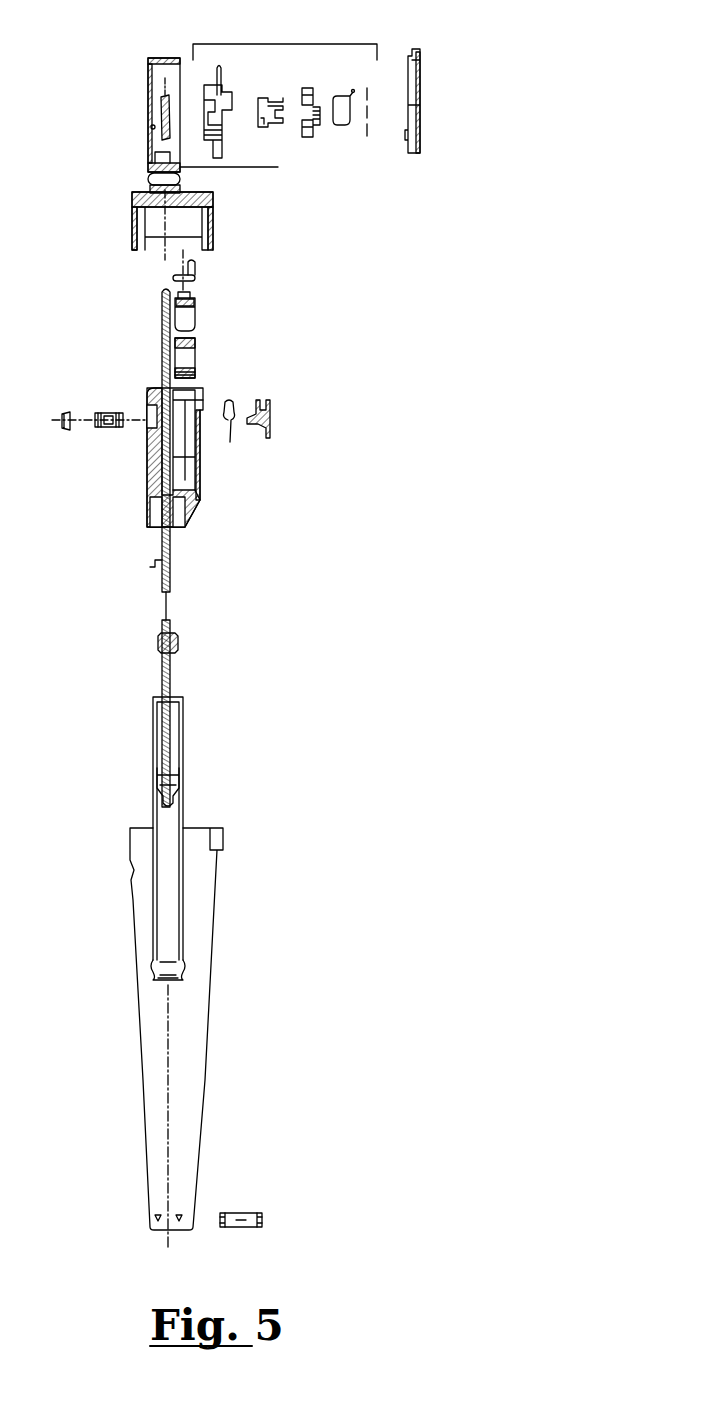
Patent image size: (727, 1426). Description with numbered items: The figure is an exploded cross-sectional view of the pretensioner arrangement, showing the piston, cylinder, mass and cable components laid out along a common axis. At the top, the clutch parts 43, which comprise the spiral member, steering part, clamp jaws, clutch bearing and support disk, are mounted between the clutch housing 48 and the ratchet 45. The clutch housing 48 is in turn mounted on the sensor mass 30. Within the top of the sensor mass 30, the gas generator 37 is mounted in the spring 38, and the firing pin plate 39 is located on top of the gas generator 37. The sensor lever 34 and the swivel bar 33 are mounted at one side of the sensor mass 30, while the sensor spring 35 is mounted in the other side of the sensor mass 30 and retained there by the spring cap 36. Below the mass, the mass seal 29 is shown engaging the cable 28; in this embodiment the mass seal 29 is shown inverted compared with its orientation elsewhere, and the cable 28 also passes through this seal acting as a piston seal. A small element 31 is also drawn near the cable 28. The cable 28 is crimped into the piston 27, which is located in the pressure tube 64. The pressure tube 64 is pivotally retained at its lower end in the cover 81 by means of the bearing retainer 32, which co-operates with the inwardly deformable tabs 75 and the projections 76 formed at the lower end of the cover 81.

The clutch housing 48 is at (158, 58).
The clutch parts 43 is at (282, 44).
The ratchet 45 is at (409, 50).
The firing pin plate 39 is at (197, 272).
The gas generator 37 is at (190, 322).
The spring 38 is at (198, 346).
The sensor mass 30 is at (185, 518).
The spring cap 36 is at (65, 432).
The sensor spring 35 is at (103, 428).
The swivel bar 33 is at (233, 433).
The sensor lever 34 is at (270, 425).
The clip 31 is at (155, 563).
The mass seal 29 is at (158, 645).
The cable 28 is at (173, 740).
The piston 27 is at (160, 778).
The pressure tube 64 is at (182, 935).
The cover 81 is at (208, 1028).
The inwardly deformable tabs 75 is at (153, 1213).
The projections 76 is at (153, 1222).
The bearing retainer 32 is at (262, 1220).